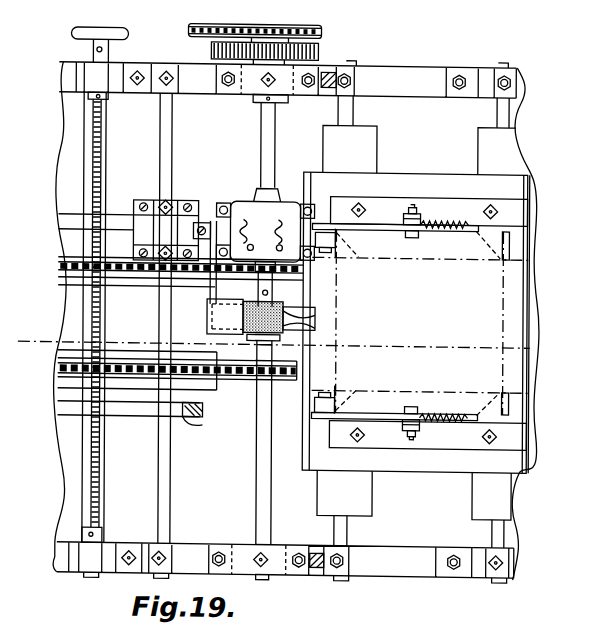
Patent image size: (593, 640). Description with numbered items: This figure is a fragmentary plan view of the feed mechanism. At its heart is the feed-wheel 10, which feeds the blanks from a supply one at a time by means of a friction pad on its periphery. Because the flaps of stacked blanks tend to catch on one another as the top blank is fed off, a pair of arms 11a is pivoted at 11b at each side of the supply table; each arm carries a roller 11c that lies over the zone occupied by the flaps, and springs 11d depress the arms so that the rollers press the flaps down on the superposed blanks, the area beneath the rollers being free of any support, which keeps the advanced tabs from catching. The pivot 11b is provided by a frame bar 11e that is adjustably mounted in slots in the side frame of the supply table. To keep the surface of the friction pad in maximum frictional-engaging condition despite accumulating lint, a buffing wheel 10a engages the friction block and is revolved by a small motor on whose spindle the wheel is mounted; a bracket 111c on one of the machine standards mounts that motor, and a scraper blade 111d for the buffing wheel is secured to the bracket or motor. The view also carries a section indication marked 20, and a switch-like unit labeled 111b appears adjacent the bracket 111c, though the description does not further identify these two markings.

The feed-wheel 10 is at (314, 320).
The buffing wheel 10a is at (312, 327).
The arms 11a is at (442, 230).
The pivot 11b is at (415, 230).
The rollers 11c is at (335, 256).
The springs 11d is at (445, 227).
The frame bar 11e is at (422, 208).
The section line 20- 20 is at (24, 343).
The switch 111b is at (240, 197).
The bracket 111c is at (148, 201).
The scraper blade 111d is at (233, 337).